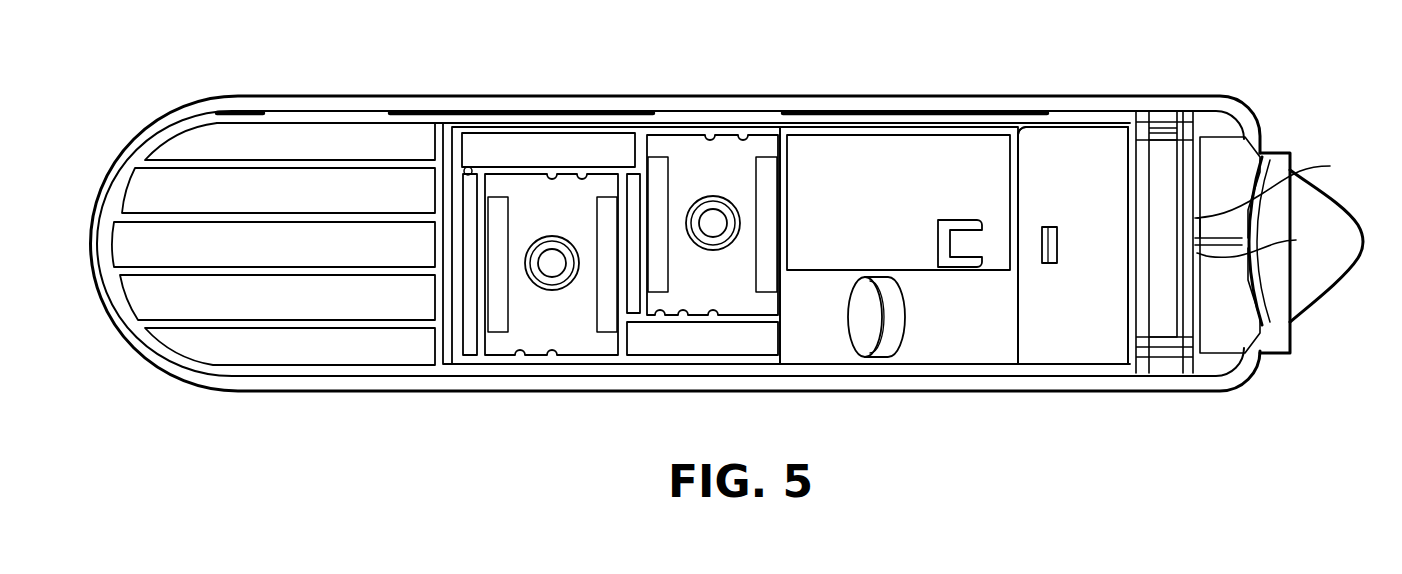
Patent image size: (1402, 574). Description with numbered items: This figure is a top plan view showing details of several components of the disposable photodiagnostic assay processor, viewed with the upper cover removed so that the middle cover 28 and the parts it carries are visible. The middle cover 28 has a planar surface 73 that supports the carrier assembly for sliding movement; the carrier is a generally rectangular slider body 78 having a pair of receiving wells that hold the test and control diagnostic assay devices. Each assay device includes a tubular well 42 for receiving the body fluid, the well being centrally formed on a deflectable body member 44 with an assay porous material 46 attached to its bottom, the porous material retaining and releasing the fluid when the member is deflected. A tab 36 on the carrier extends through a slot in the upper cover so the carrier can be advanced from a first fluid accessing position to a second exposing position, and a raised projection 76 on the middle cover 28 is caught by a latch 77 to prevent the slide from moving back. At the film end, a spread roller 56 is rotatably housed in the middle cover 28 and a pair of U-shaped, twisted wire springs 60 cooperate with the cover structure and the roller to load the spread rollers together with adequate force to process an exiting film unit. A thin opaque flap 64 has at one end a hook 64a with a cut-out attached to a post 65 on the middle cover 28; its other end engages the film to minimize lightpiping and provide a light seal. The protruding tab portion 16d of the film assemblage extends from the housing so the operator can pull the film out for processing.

The middle cover 28 is at (512, 110).
The tab 36 is at (892, 338).
The tubular well 42 is at (540, 288).
The deflectable body member 44 is at (590, 338).
The assay porous material 46 is at (552, 262).
The spread roller 56 is at (1165, 330).
The wire springs 60 is at (1150, 112).
The flap 64 is at (1280, 162).
The hook 64a is at (1285, 186).
The post 65 is at (1261, 242).
The planar surface 73 is at (1092, 176).
The raised projection 76 is at (1053, 227).
The latch 77 is at (962, 237).
The slider body 78 is at (983, 345).
The tab portion 16d is at (1305, 315).